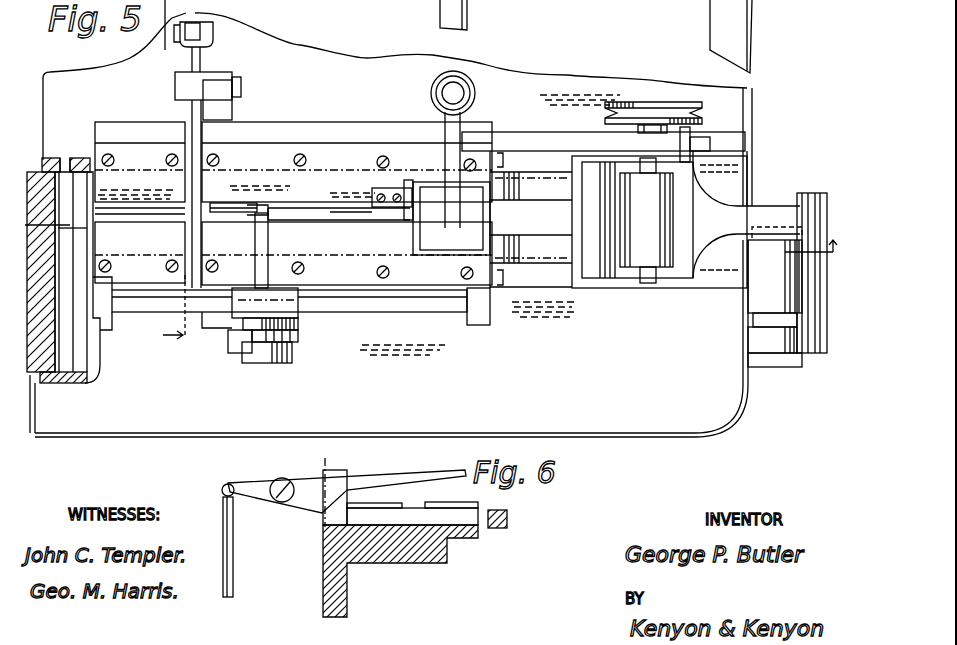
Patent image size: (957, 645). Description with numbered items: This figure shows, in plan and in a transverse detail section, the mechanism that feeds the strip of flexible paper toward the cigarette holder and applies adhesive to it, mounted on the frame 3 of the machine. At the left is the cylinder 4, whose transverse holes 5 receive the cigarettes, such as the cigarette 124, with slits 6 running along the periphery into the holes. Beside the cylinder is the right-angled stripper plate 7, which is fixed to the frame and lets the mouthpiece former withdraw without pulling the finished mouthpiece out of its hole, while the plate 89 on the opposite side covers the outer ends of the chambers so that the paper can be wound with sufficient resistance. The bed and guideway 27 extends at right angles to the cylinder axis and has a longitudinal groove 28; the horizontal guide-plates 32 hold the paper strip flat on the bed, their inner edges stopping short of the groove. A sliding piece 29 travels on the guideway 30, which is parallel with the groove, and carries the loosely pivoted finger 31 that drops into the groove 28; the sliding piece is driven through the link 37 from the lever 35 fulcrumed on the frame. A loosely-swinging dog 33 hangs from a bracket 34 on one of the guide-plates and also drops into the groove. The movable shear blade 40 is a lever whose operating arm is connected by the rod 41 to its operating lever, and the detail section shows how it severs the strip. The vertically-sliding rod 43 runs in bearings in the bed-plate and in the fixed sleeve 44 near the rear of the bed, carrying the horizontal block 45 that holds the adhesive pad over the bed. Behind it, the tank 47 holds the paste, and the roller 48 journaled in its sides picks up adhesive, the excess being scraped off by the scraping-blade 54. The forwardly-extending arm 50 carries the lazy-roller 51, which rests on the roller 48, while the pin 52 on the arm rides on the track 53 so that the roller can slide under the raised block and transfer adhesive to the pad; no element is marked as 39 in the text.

In FIG. 5, the frame 3 is at (393, 262).
In FIG. 5, the cylinder 4 is at (431, 327).
In FIG. 5, the transverse holes 5 is at (46, 172).
In FIG. 5, the slits 6 is at (182, 314).
In FIG. 5, the right-angled plate (stripper) 7 is at (65, 182).
In FIG. 5, the bed and guideway 27 is at (300, 207).
In FIG. 5, the longitudinal groove 28 is at (328, 213).
In FIG. 5, the sliding piece 29 is at (268, 258).
In FIG. 5, the guideway 30 is at (443, 313).
In FIG. 6, the guideway 30 is at (503, 528).
In FIG. 5, the finger 31 is at (248, 213).
In FIG. 5, the horizontal guide-plates 32 is at (311, 219).
In FIG. 6, the horizontal guide-plates 32 is at (388, 508).
In FIG. 5, the loosely-swinging dog 33 is at (388, 214).
In FIG. 5, the bracket 34 is at (410, 213).
In FIG. 5, the lever 35 is at (242, 338).
In FIG. 5, the link 37 is at (300, 335).
In FIG. 6, the post 39 is at (353, 518).
In FIG. 5, the movable blade of the shears 40 is at (190, 112).
In FIG. 6, the movable blade of the shears 40 is at (304, 479).
In FIG. 5, the rod 41 is at (240, 21).
In FIG. 6, the rod 41 is at (233, 590).
In FIG. 5, the vertically-sliding rod 43 is at (460, 92).
In FIG. 5, the fixed sleeve or bracket 44 is at (476, 115).
In FIG. 5, the horizontal block 45 is at (451, 218).
In FIG. 5, the tank 47 is at (737, 178).
In FIG. 5, the roller 48 is at (612, 270).
In FIG. 5, the forwardly-extending arm 50 is at (747, 220).
In FIG. 5, the lazy-roller 51 is at (646, 220).
In FIG. 5, the pin or projection 52 is at (692, 135).
In FIG. 5, the track 53 is at (534, 140).
In FIG. 5, the scraping-blade 54 is at (718, 262).
In FIG. 5, the plate 89 is at (65, 383).
In FIG. 5, the cigarette 124 is at (65, 362).